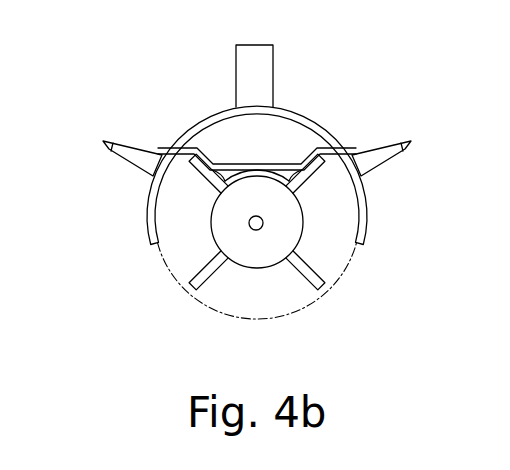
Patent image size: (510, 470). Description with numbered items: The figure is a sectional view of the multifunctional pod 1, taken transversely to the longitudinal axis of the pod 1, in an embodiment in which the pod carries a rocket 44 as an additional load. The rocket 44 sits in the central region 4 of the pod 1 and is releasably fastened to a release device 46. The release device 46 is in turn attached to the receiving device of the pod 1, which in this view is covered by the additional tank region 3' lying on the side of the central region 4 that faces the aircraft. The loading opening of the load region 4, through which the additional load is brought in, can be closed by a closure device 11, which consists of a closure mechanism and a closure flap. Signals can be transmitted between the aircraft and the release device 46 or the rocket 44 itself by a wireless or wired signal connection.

The multifunctional pod 1 is at (243, 179).
The additional tank region 3' is at (257, 109).
The central region 4 is at (189, 234).
The closure device 11 is at (151, 252).
The rocket 44 is at (303, 228).
The release device 46 is at (270, 172).